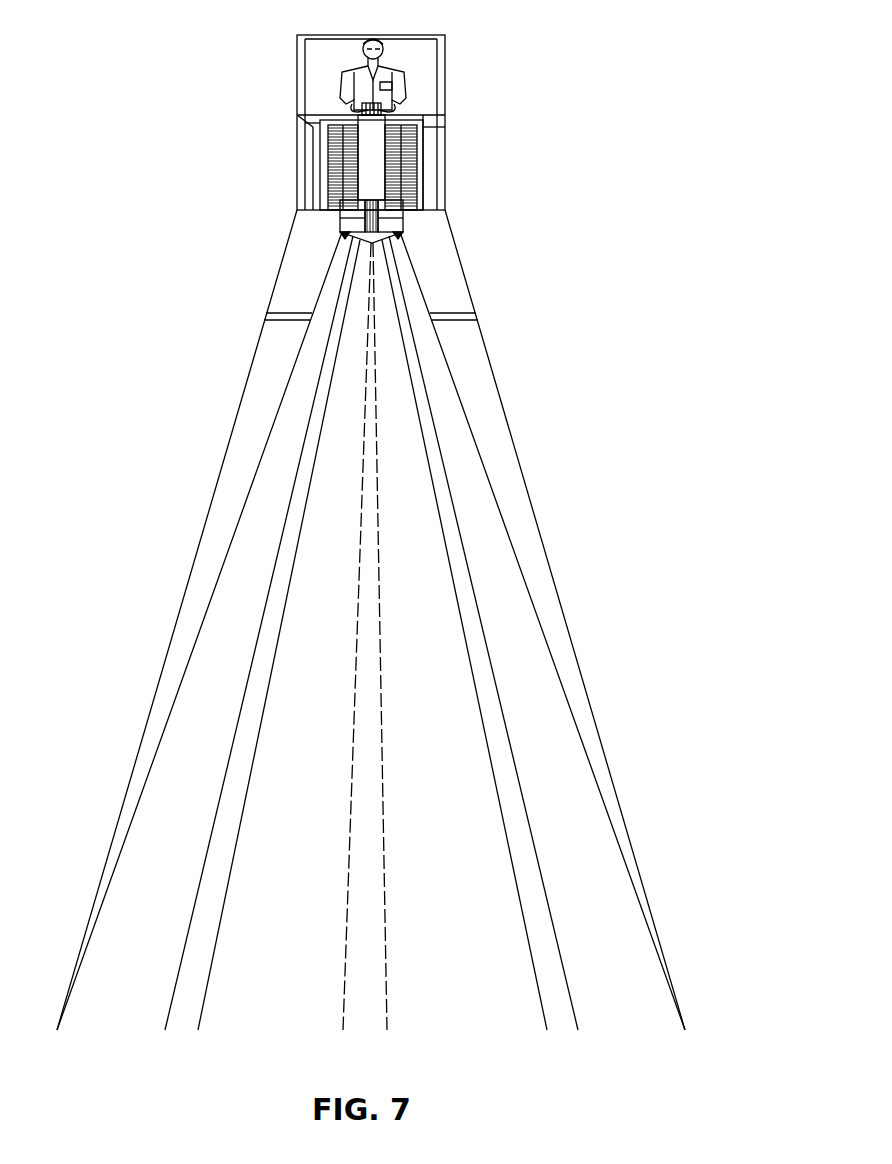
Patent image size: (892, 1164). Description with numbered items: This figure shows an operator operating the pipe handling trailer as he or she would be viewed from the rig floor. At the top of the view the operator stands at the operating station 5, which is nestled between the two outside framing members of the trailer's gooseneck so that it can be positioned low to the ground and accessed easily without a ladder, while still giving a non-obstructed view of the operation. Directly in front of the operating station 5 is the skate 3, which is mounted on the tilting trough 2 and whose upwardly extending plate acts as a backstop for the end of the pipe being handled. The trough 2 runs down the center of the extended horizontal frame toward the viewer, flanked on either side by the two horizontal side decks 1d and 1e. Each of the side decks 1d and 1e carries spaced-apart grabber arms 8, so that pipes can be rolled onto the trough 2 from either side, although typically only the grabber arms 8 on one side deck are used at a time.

The operating station 5 is at (410, 105).
The skate 3 is at (352, 212).
The grabber arms 8 is at (281, 315).
The tilting trough 2 is at (390, 312).
The side deck 1d is at (270, 380).
The side deck 1e is at (470, 363).